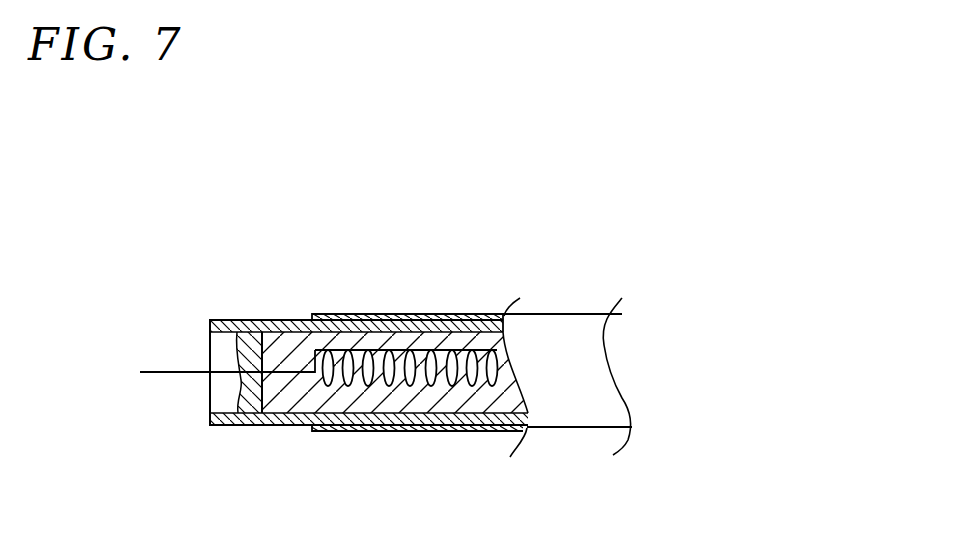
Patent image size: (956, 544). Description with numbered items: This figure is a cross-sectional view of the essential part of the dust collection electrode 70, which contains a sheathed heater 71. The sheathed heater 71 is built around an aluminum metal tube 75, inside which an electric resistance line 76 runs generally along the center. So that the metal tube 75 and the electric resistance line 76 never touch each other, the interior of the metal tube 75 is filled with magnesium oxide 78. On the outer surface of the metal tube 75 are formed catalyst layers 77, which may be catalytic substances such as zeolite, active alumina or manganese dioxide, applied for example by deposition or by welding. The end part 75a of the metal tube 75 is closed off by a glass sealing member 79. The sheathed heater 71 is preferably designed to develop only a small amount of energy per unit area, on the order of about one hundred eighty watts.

The dust collection electrode 70 is at (579, 209).
The sheathed heater 71 is at (218, 306).
The metal tube 75 is at (293, 318).
The end part 75a is at (258, 318).
The electric resistance line 76 is at (160, 376).
The catalyst layers 77 is at (457, 315).
The magnesium oxide 78 is at (383, 340).
The glass sealing member 79 is at (255, 408).